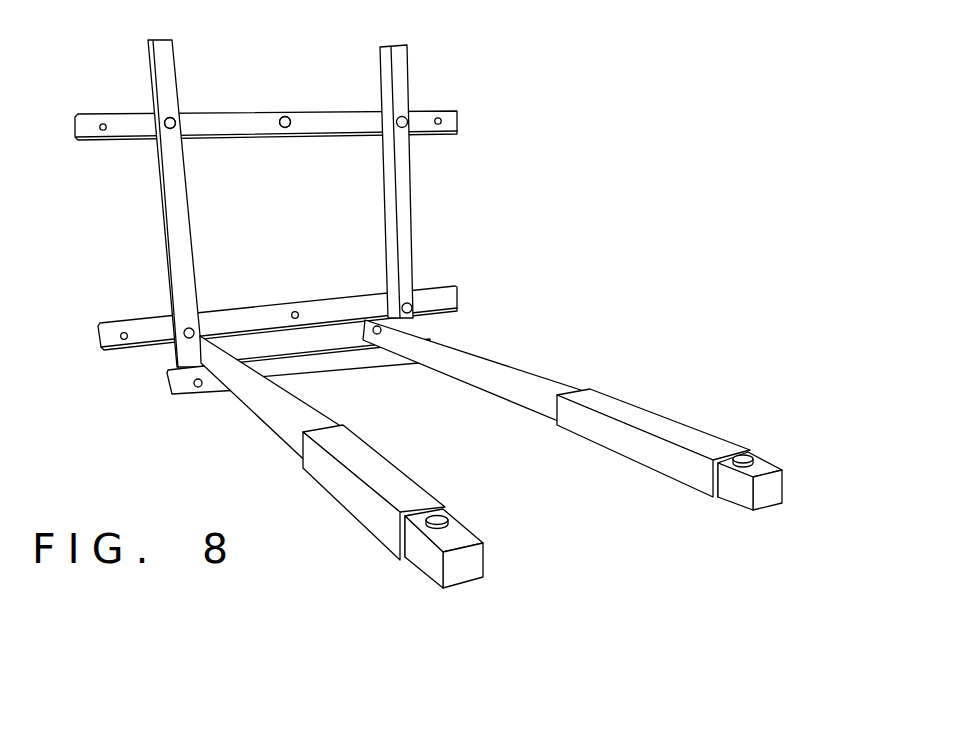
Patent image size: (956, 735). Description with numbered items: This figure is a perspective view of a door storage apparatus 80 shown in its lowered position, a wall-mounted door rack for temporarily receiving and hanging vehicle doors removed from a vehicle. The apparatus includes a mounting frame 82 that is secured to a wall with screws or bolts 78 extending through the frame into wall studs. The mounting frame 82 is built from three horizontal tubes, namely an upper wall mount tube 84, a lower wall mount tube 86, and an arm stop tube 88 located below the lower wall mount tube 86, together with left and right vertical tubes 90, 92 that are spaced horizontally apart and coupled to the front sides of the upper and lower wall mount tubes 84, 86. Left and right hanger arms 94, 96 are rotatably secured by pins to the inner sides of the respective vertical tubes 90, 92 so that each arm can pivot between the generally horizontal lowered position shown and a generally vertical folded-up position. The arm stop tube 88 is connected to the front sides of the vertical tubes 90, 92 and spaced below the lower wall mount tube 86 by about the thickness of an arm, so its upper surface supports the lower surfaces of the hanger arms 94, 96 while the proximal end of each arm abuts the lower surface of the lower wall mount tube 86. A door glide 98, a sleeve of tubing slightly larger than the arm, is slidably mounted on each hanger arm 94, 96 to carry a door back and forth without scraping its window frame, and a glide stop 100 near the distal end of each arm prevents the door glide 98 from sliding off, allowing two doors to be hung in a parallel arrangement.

The screws or bolts 78 is at (170, 118).
The door storage apparatus 80 is at (516, 133).
The mounting frame 82 is at (412, 66).
The upper wall mount tube 84 is at (207, 118).
The lower wall mount tube 86 is at (125, 327).
The arm stop tube 88 is at (184, 390).
The left vertical tube 90 is at (173, 203).
The right vertical tube 92 is at (405, 213).
The left hanger arm 94 is at (287, 430).
The right hanger arm 96 is at (512, 358).
The door glide 98 is at (382, 517).
The glide stop 100 is at (438, 528).